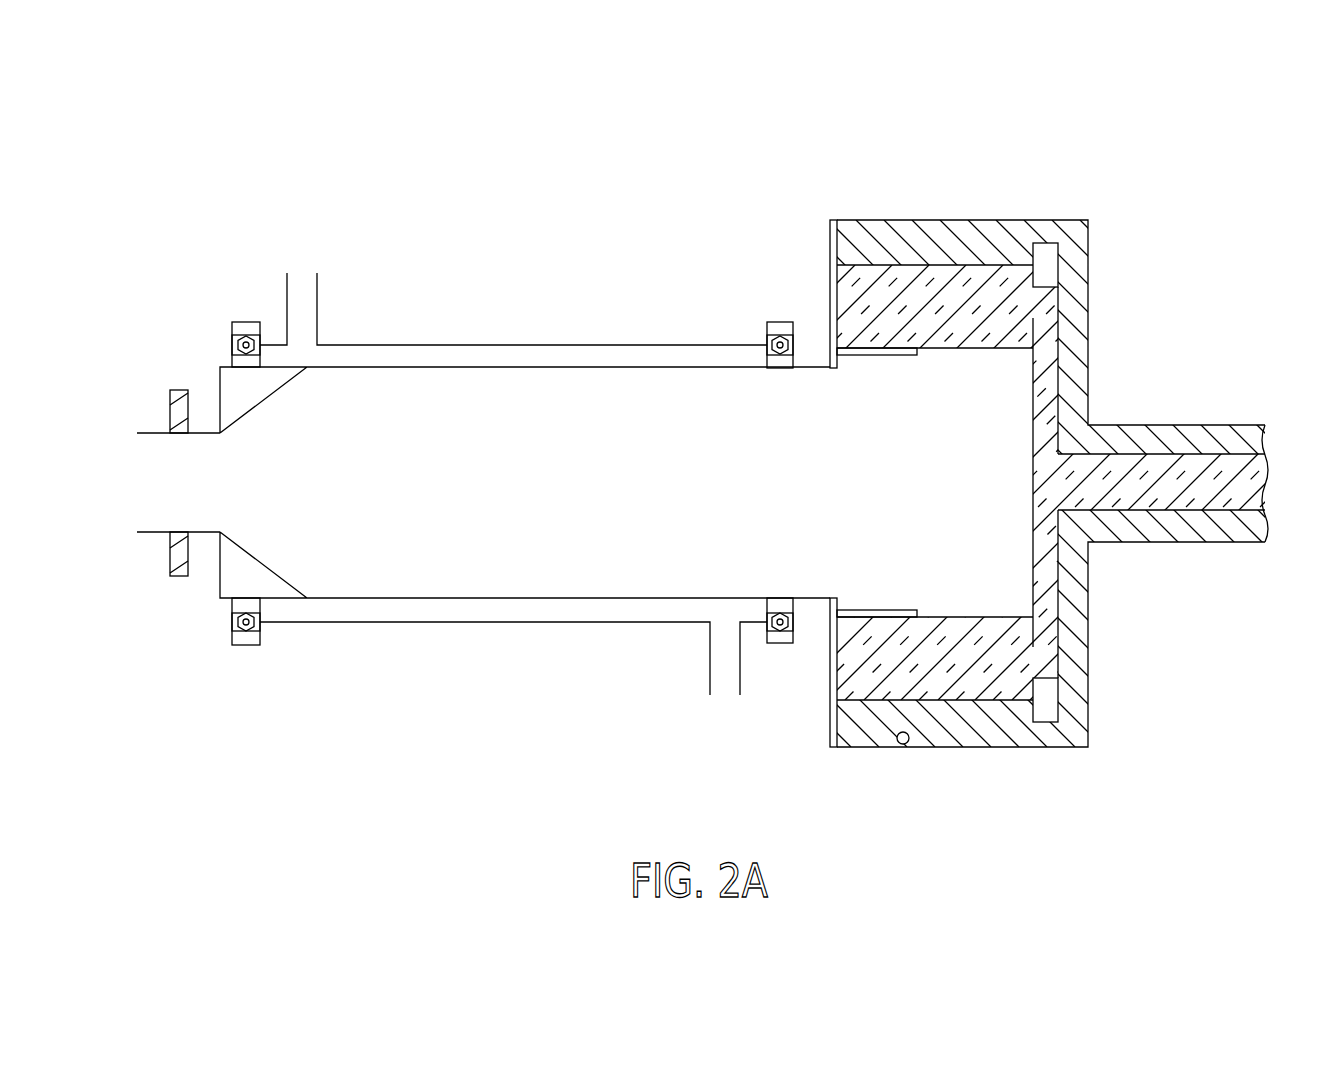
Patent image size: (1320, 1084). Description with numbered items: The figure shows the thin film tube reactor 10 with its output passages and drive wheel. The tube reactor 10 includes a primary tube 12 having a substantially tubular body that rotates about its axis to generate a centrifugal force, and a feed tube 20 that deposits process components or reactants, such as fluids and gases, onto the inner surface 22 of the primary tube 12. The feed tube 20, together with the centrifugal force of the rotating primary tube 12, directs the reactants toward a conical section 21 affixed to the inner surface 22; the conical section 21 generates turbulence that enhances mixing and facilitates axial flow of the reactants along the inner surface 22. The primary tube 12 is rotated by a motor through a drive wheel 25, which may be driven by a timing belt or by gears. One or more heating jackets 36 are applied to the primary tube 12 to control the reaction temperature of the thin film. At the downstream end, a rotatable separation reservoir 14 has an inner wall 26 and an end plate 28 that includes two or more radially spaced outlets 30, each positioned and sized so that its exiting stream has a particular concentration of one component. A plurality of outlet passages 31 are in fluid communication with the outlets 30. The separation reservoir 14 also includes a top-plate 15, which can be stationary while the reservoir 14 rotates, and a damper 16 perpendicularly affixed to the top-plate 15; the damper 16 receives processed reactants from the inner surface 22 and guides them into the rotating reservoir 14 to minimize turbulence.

The tube reactor 10 is at (999, 158).
The primary tube 12 is at (814, 360).
The separation reservoir 14 is at (973, 752).
The top-plate 15 is at (828, 240).
The damper 16 is at (870, 357).
The feed tube 20 is at (153, 533).
The conical section 21 is at (282, 384).
The inner surface 22 is at (417, 368).
The drive wheel 25 is at (178, 390).
The inner wall 26 is at (894, 744).
The end plate 28 is at (1030, 475).
The outlets 30 is at (1033, 233).
The outlet passages 31 is at (1202, 425).
The heating jackets 36 is at (493, 344).